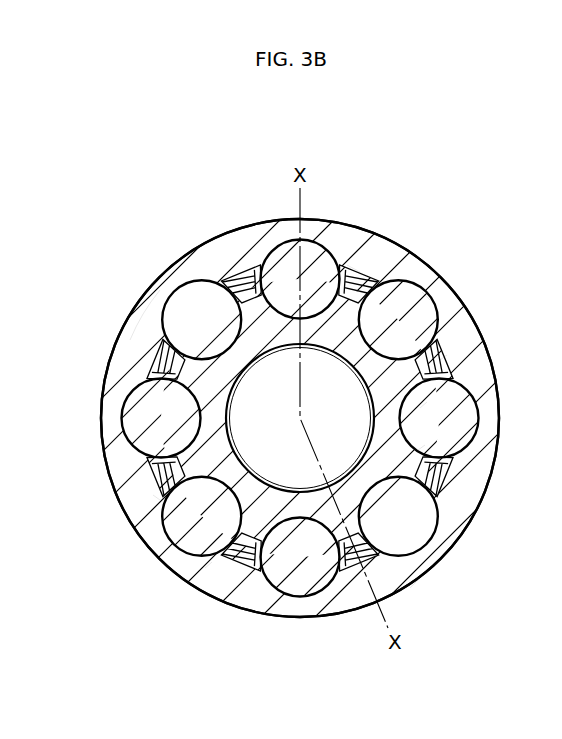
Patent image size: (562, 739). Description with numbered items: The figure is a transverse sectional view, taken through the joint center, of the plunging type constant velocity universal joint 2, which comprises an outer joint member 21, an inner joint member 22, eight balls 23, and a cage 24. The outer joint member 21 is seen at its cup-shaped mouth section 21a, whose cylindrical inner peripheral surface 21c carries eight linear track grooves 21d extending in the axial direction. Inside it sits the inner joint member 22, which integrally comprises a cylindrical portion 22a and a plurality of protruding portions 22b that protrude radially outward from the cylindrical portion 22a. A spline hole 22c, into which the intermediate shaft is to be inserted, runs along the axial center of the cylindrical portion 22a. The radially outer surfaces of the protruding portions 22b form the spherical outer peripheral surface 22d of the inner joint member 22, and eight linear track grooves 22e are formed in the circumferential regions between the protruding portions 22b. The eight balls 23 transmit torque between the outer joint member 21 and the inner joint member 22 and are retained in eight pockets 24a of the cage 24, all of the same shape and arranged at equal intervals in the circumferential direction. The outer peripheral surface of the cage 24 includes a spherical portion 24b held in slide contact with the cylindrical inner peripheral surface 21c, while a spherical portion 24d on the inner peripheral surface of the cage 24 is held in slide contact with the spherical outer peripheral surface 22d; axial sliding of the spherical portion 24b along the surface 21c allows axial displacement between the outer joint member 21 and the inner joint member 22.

The plunging type constant velocity universal joint 2 is at (443, 242).
The outer joint member 21 is at (178, 255).
The mouth section 21a is at (152, 315).
The cylindrical inner peripheral surface 21c is at (347, 265).
The track grooves 21d is at (422, 292).
The inner joint member 22 is at (348, 502).
The cylindrical portion 22a is at (205, 568).
The protruding portions 22b is at (153, 495).
The spline hole 22c is at (253, 480).
The spherical outer peripheral surface 22d is at (447, 355).
The track grooves 22e is at (427, 402).
The balls 23 is at (288, 570).
The cage 24 is at (242, 277).
The pockets 24a is at (410, 588).
The spherical portion 24b is at (438, 494).
The spherical portion 24d is at (418, 450).